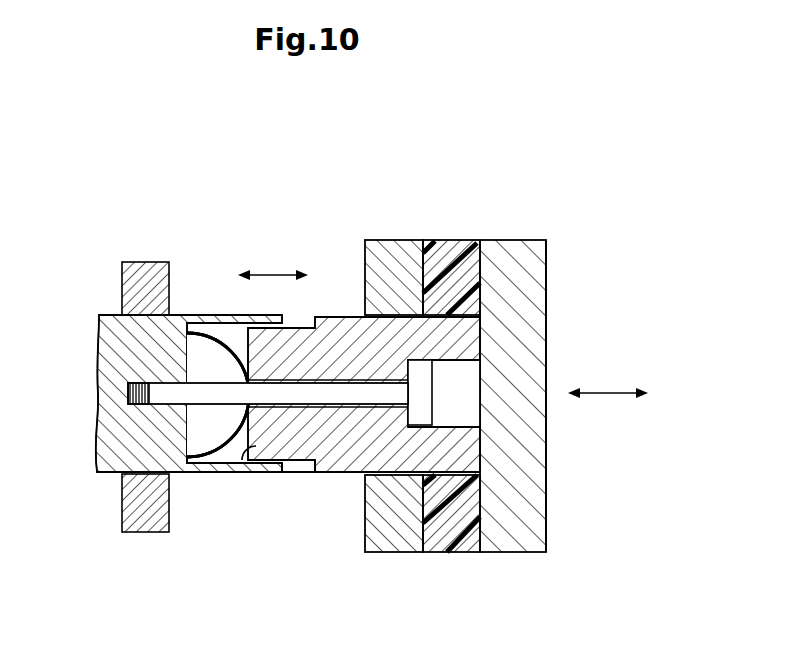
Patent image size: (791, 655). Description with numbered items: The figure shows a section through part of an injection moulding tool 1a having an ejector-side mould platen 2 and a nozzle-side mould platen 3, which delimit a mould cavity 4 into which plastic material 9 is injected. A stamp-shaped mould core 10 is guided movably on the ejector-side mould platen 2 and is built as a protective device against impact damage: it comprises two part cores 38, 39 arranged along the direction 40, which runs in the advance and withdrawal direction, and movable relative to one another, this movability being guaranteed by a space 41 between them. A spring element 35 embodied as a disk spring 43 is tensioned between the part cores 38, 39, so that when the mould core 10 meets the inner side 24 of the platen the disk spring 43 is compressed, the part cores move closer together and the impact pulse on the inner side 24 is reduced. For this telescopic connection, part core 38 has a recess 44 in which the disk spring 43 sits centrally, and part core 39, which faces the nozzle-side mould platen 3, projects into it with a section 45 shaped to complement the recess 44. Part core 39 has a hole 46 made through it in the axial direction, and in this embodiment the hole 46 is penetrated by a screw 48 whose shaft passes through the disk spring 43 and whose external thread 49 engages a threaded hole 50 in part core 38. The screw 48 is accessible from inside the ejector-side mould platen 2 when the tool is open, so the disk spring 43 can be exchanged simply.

The injection moulding tool 1a is at (568, 255).
The ejector-side mould platen 2 is at (392, 250).
The nozzle-side mould platen 3 is at (528, 508).
The mould cavity 4 is at (475, 265).
The plastic material 9 is at (452, 263).
The mould core 10 is at (340, 312).
The inner side 24 is at (473, 512).
The spring element 35 is at (218, 395).
The part core 38 is at (112, 338).
The part core 39 is at (340, 437).
The direction 40 is at (272, 275).
The space 41 is at (296, 466).
The disk spring 43 is at (222, 462).
The recess 44 is at (252, 449).
The section 45 is at (252, 348).
The hole 46 is at (462, 367).
The screw 48 is at (383, 408).
The external thread 49 is at (130, 390).
The threaded hole 50 is at (150, 408).